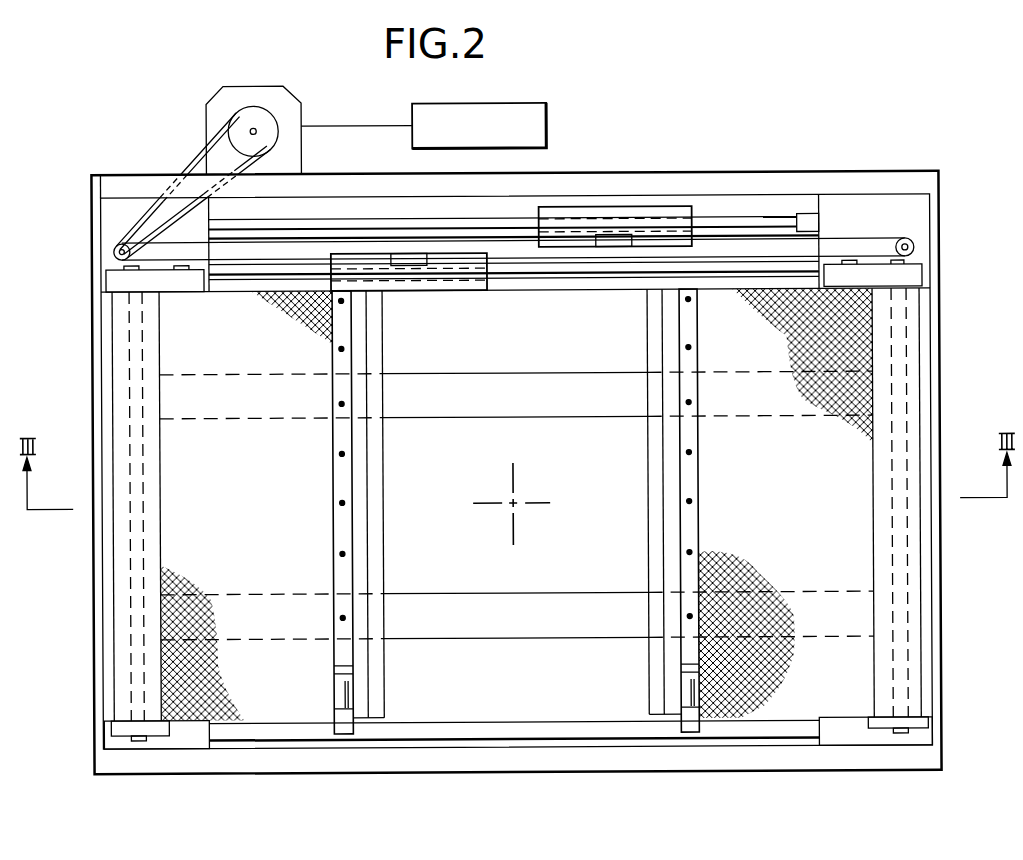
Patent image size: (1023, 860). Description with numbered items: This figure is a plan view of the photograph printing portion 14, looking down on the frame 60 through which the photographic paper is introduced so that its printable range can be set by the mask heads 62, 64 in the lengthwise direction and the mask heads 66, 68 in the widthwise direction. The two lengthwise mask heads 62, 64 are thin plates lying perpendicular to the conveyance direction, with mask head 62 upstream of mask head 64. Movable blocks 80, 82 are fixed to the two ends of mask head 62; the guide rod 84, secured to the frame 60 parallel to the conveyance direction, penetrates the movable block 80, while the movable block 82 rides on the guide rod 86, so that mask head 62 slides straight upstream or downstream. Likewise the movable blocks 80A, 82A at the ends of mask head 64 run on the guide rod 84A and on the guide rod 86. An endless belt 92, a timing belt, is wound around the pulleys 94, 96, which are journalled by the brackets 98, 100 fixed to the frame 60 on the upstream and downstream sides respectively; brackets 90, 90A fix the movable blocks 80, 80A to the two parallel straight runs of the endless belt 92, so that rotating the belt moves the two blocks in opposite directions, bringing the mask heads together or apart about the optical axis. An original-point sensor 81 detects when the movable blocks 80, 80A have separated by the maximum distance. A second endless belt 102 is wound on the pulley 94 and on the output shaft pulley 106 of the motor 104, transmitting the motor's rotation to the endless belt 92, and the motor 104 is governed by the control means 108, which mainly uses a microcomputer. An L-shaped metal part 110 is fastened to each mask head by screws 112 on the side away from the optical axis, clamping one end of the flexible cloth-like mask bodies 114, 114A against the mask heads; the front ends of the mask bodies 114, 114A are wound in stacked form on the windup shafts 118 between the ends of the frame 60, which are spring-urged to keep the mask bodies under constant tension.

The photograph printing portion 14 is at (756, 171).
The frame 60 is at (941, 218).
The mask head in the lengthwise direction 62 is at (355, 525).
The mask head in the lengthwise direction 64 is at (665, 508).
The mask head in the widthwise direction 66 is at (496, 385).
The mask head in the widthwise direction 68 is at (494, 605).
The movable block 80 is at (436, 291).
The movable block 80A is at (665, 207).
The original-point sensor 81 is at (800, 212).
The movable block 82 is at (338, 690).
The movable block 82A is at (700, 690).
The guide rod 84 is at (517, 263).
The guide rod 84A is at (527, 220).
The guide rod 86 is at (493, 728).
The bracket 90 is at (418, 253).
The bracket 90A is at (608, 250).
The endless belt 92 is at (471, 241).
The pulley 94 is at (113, 250).
The pulley 96 is at (915, 252).
The bracket 98 is at (115, 185).
The bracket 100 is at (875, 203).
The endless belt 102 is at (206, 150).
The motor 104 is at (288, 153).
The output shaft pulley 106 is at (278, 122).
The control means 108 is at (512, 103).
The L-shaped metal part 110 is at (333, 520).
The screws 112 is at (340, 348).
The mask body 114 is at (320, 462).
The mask body 114A is at (712, 470).
The windup shafts 118 is at (142, 428).